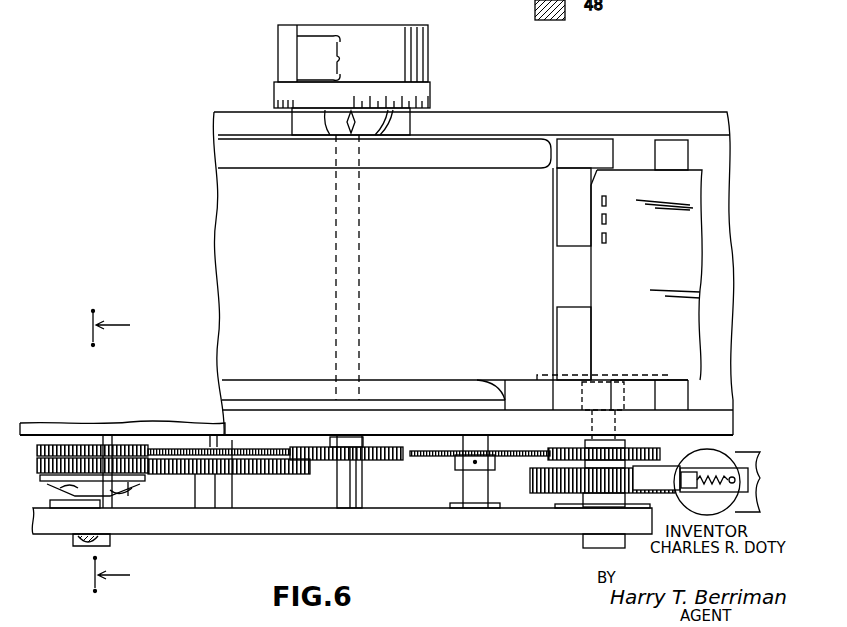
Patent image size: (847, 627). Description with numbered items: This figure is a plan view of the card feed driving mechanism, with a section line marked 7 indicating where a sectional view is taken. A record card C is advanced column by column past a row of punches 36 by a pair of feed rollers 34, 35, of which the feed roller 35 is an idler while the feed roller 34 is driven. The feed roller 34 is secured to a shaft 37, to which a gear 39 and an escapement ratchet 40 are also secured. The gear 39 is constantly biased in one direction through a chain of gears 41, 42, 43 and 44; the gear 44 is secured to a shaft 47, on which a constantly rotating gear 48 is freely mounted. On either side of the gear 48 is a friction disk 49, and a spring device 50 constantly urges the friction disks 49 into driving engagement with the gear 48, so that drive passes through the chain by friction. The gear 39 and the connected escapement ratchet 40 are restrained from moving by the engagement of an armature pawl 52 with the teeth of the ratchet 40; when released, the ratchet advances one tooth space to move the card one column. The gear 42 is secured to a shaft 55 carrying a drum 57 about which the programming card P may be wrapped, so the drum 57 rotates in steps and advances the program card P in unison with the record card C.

The drum 57 is at (353, 28).
The programming card P is at (405, 64).
The record card C is at (614, 173).
The punches 36 is at (609, 212).
The feed roller 35 is at (612, 374).
The feed roller 34 is at (652, 376).
The shaft 37 is at (615, 425).
The shaft 55 is at (337, 478).
The shaft 47 is at (97, 440).
The friction disk 49 is at (40, 470).
The gear 48 is at (60, 487).
The spring device 50 is at (135, 488).
The gear 44 is at (133, 447).
The gear 43 is at (272, 450).
The gear 42 is at (378, 460).
The gear 41 is at (450, 456).
The gear 39 is at (650, 463).
The escapement ratchet 40 is at (545, 490).
The armature pawl 52 is at (717, 452).
The section line 7- 7 is at (117, 451).